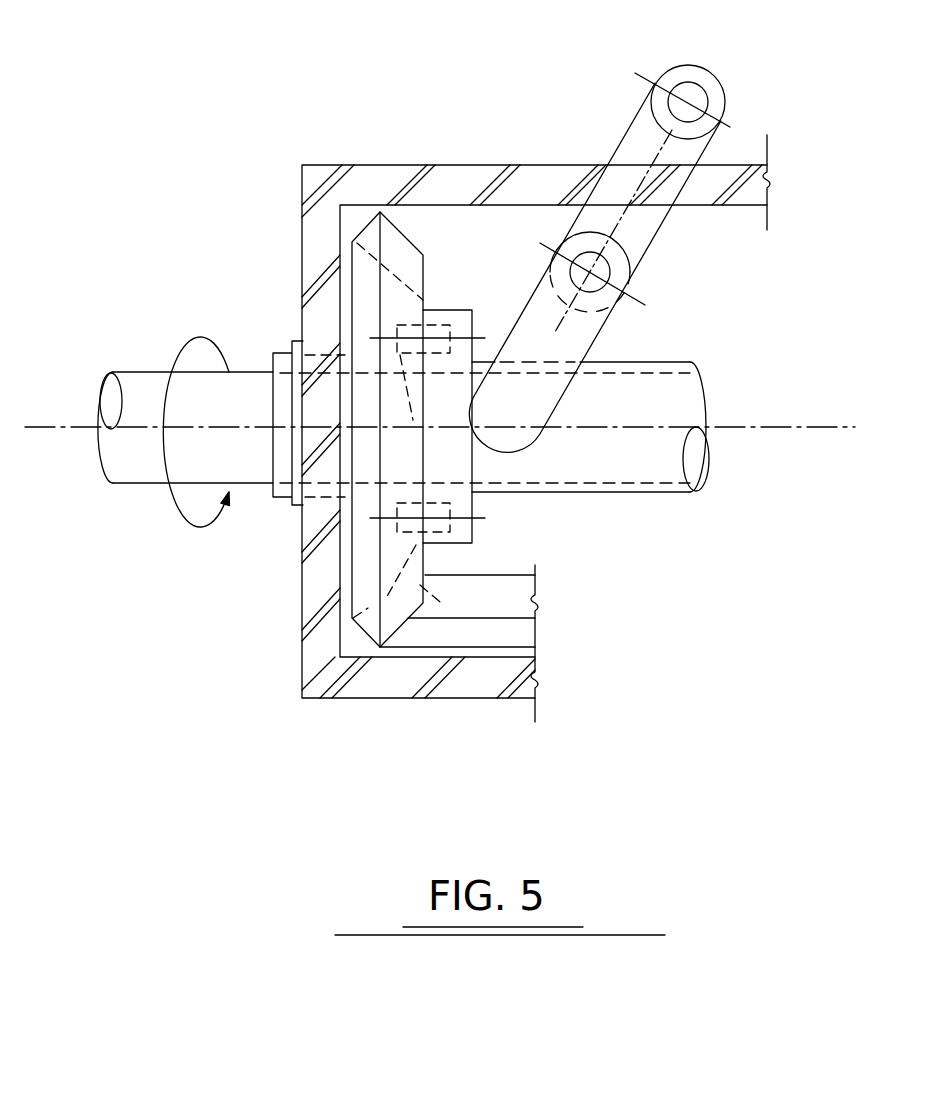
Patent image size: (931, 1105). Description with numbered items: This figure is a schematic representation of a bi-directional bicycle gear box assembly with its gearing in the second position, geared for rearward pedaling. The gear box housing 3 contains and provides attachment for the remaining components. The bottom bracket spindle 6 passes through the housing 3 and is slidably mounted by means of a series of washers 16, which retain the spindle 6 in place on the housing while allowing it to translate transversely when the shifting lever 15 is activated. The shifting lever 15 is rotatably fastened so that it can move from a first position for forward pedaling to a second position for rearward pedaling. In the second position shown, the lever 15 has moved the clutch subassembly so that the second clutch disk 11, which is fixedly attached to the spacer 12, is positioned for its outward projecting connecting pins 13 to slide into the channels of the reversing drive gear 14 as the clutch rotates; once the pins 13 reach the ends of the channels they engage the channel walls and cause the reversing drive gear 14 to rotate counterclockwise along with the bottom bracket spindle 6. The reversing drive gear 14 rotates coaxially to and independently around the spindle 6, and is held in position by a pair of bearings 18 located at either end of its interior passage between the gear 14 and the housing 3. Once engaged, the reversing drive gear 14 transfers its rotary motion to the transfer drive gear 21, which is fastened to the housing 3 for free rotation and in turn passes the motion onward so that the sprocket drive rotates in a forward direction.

The gear box housing 3 is at (450, 163).
The bottom bracket spindle 6 is at (143, 487).
The second clutch disk 11 is at (442, 307).
The spacer 12 is at (613, 498).
The connecting pins 13 is at (453, 530).
The reversing drive gear 14 is at (413, 246).
The shifting lever 15 is at (636, 112).
The washers 16 is at (346, 335).
The bearings 18 is at (325, 497).
The transfer drive gear 21 is at (480, 655).